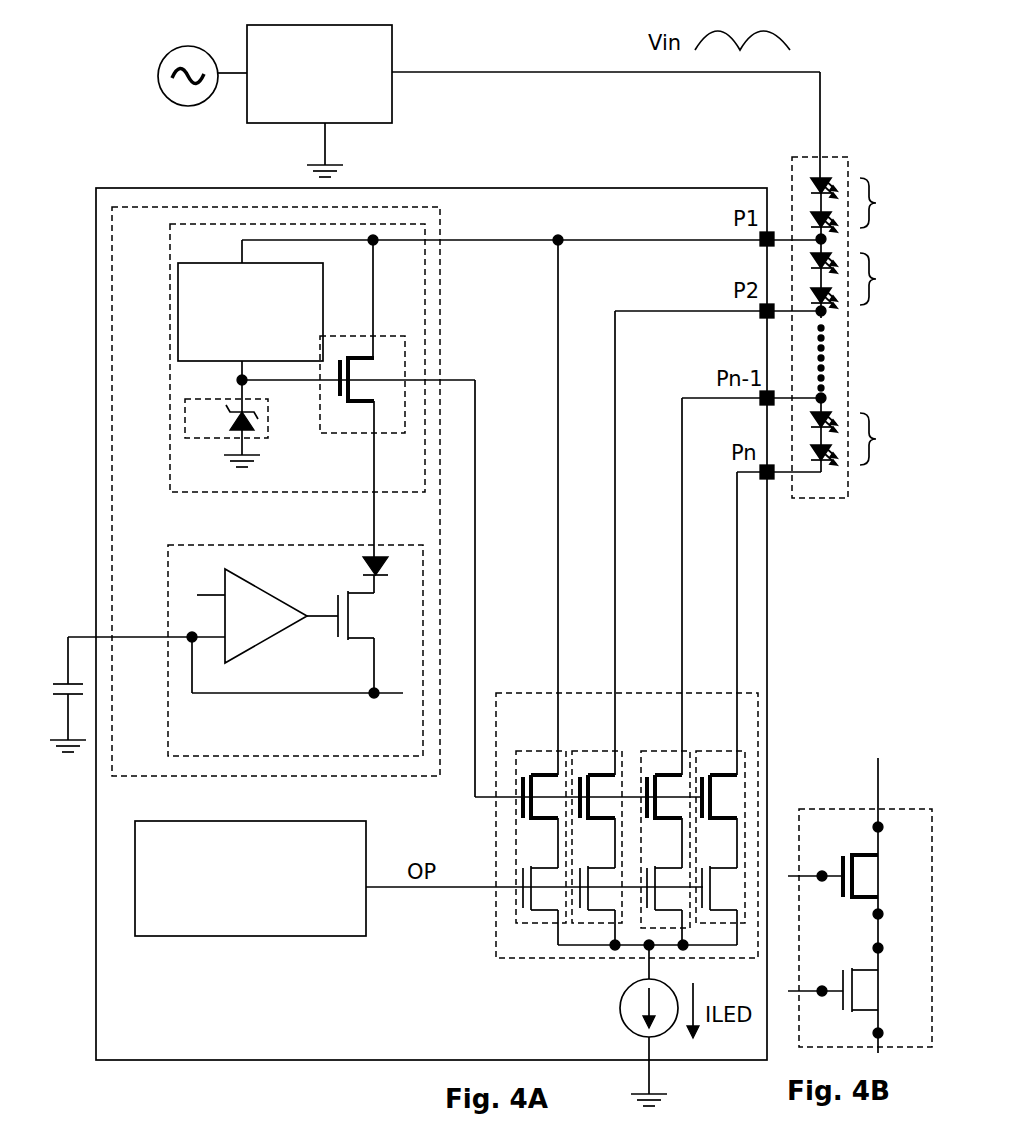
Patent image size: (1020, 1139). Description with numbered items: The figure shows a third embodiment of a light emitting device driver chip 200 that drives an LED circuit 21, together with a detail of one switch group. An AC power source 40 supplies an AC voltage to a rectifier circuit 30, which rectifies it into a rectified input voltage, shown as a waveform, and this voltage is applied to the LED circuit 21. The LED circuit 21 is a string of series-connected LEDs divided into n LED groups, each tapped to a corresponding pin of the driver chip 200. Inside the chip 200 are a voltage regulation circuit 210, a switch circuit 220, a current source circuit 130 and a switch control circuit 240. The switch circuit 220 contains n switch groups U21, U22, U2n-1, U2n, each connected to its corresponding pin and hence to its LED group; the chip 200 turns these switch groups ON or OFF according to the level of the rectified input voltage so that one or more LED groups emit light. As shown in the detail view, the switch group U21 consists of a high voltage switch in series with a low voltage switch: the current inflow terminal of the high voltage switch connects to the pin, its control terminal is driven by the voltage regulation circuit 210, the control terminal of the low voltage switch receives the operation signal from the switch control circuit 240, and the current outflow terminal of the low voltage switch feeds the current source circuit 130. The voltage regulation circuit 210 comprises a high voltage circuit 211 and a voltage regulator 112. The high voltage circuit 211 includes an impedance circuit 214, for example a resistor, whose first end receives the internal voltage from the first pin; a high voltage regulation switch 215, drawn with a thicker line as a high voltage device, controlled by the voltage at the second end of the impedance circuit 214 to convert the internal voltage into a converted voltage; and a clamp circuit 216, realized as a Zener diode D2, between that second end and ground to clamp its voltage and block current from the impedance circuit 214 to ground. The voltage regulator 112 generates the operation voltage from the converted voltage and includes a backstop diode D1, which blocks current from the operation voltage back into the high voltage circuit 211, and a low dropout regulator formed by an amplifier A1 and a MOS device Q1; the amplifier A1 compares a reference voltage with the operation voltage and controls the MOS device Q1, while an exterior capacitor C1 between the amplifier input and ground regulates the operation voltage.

In FIG. 4A, the light emitting device driver chip 200 is at (151, 1050).
In FIG. 4A, the AC power source 40 is at (190, 47).
In FIG. 4A, the rectifier circuit 30 is at (338, 117).
In FIG. 4A, the LED circuit 21 is at (848, 162).
In FIG. 4A, the voltage regulation circuit 210 is at (151, 244).
In FIG. 4A, the high voltage circuit 211 is at (216, 484).
In FIG. 4A, the impedance circuit 214 is at (220, 353).
In FIG. 4A, the high voltage regulation switch 215 is at (364, 429).
In FIG. 4A, the clamp circuit 216 is at (185, 413).
In FIG. 4A, the voltage regulator 112 is at (216, 742).
In FIG. 4A, the switch control circuit 240 is at (181, 924).
In FIG. 4A, the switch circuit 220 is at (500, 960).
In FIG. 4A, the current source circuit 130 is at (626, 990).
In FIG. 4A, the diode D1 is at (359, 566).
In FIG. 4A, the Zener diode D2 is at (226, 418).
In FIG. 4A, the MOS device Q1 is at (356, 634).
In FIG. 4A, the amplifier A1 is at (278, 632).
In FIG. 4A, the exterior capacitor C1 is at (61, 694).
In FIG. 4A, the switch group U21 is at (541, 750).
In FIG. 4B, the switch group U21 is at (859, 806).
In FIG. 4A, the switch group U22 is at (602, 750).
In FIG. 4A, the switch group U2n-1 is at (664, 750).
In FIG. 4A, the switch group U2n is at (726, 750).